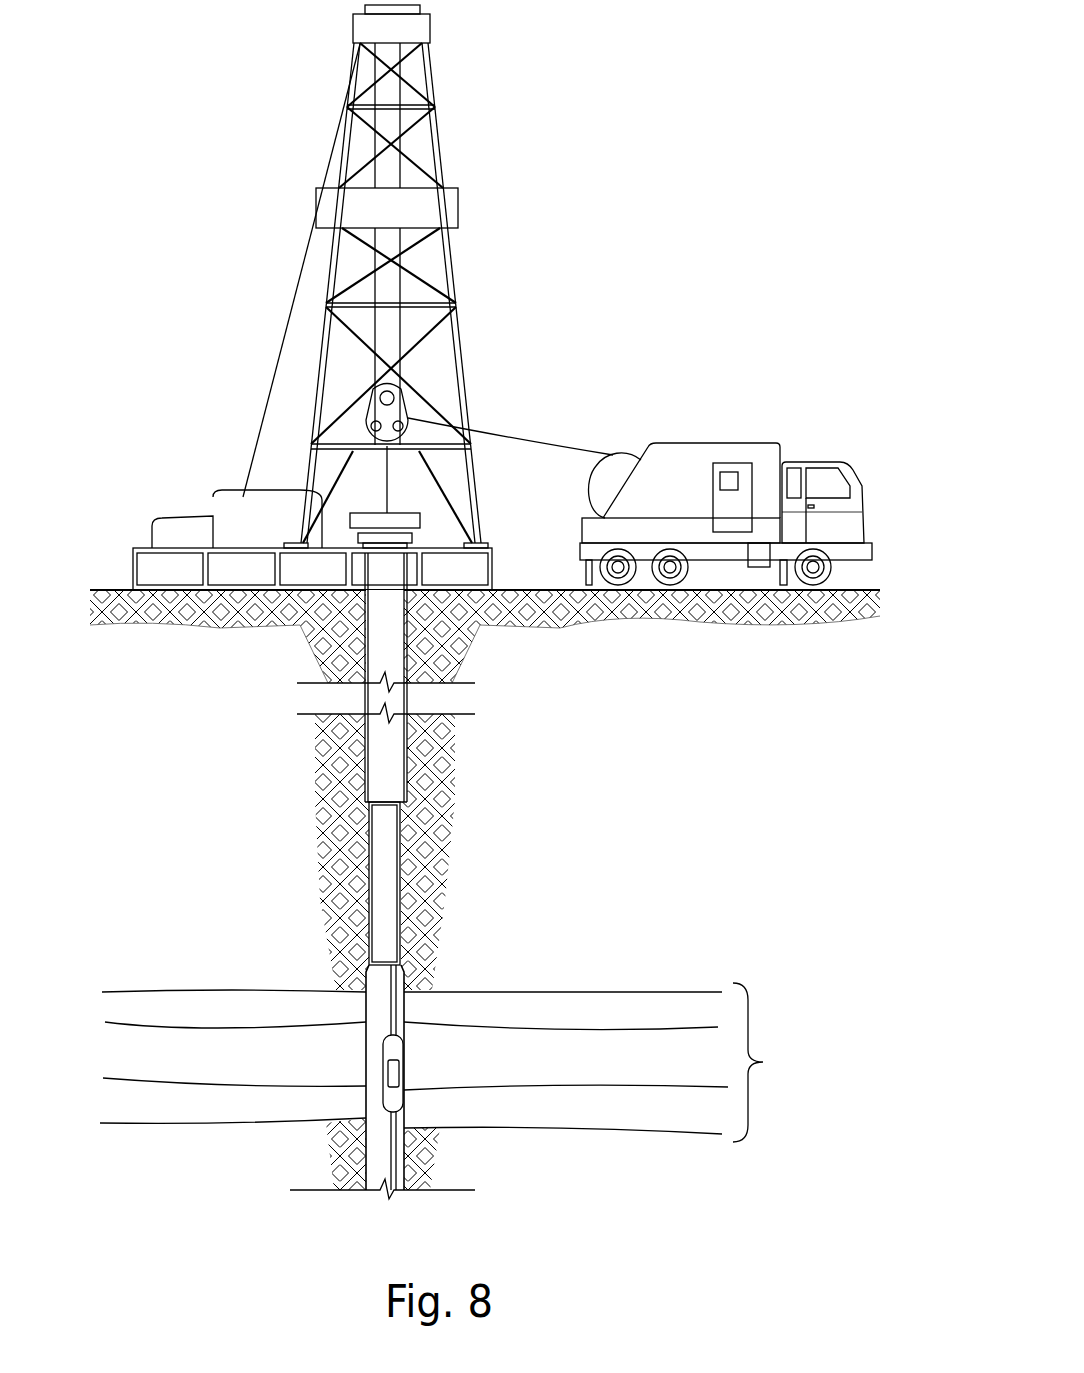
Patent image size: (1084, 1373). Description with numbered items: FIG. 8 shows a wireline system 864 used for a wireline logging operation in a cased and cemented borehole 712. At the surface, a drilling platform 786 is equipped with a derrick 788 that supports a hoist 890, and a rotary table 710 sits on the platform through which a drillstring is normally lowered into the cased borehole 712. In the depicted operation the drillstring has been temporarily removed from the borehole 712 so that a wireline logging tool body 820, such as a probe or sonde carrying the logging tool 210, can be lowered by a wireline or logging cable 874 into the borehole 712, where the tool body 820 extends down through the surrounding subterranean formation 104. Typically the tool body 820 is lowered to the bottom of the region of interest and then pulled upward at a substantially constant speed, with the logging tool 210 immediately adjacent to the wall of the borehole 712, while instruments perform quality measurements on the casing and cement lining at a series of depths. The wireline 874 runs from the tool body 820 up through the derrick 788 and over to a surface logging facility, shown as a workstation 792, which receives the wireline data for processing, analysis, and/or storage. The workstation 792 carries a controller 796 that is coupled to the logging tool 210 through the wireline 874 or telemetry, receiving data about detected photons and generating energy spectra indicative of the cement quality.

The wireline system 864 is at (664, 207).
The hoist 890 is at (400, 387).
The wireline 874 is at (513, 433).
The controller 796 is at (731, 464).
The workstation 792 is at (753, 461).
The rotary table 710 is at (420, 513).
The derrick 788 is at (478, 533).
The drilling platform 786 is at (495, 577).
The borehole 712 is at (366, 1055).
The wireline logging tool body 820 is at (404, 1048).
The logging tool 210 is at (402, 1073).
The subterranean formation 104 is at (456, 1062).